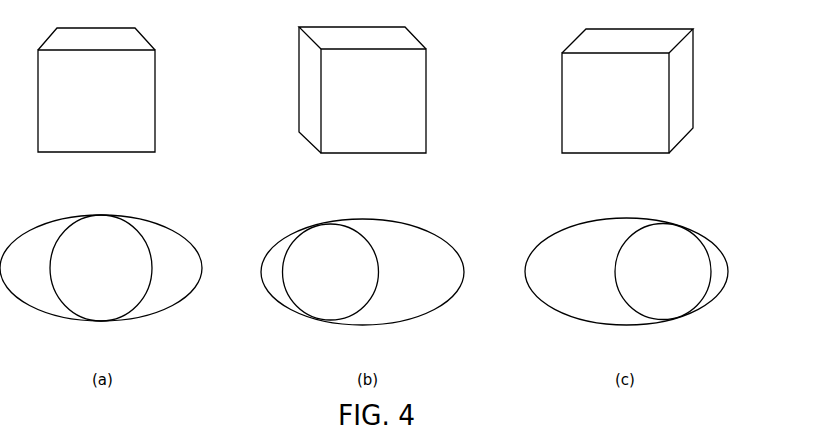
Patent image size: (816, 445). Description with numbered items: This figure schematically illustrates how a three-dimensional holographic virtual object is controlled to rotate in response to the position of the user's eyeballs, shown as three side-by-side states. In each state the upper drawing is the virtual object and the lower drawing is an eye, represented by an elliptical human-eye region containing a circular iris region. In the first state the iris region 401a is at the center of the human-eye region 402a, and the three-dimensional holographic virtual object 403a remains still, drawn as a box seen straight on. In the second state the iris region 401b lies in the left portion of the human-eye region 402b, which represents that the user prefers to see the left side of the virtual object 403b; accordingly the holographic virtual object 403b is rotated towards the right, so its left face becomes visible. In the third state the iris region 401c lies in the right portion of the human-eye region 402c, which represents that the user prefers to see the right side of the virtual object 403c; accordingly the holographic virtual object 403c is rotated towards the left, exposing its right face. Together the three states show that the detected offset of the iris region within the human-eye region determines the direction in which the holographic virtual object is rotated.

The iris region 401a is at (115, 297).
The human-eye region 402a is at (170, 227).
The 3D holographic virtual object 403a is at (137, 78).
The iris region 401b is at (358, 302).
The human-eye region 402b is at (435, 230).
The 3D holographic virtual object 403b is at (400, 80).
The iris region 401c is at (641, 303).
The human-eye region 402c is at (697, 232).
The 3D holographic virtual object 403c is at (663, 80).